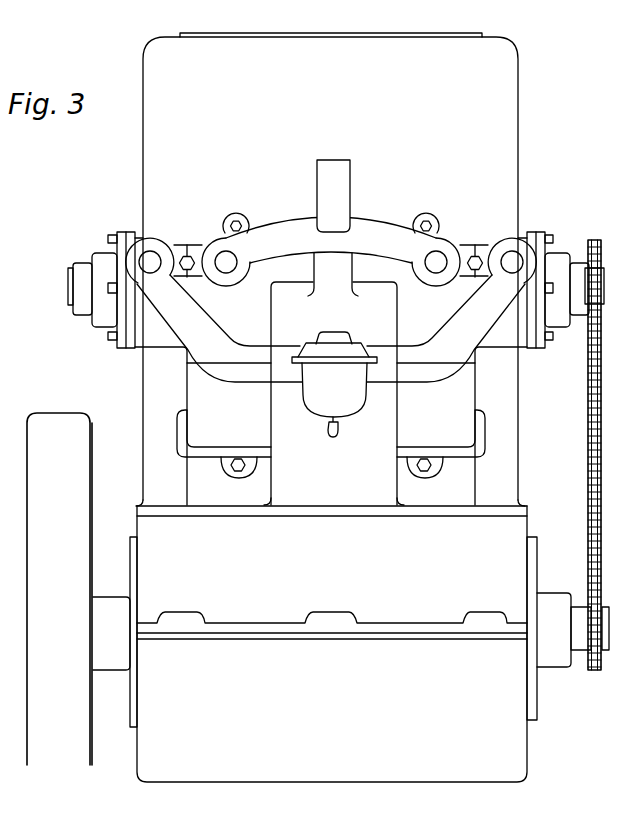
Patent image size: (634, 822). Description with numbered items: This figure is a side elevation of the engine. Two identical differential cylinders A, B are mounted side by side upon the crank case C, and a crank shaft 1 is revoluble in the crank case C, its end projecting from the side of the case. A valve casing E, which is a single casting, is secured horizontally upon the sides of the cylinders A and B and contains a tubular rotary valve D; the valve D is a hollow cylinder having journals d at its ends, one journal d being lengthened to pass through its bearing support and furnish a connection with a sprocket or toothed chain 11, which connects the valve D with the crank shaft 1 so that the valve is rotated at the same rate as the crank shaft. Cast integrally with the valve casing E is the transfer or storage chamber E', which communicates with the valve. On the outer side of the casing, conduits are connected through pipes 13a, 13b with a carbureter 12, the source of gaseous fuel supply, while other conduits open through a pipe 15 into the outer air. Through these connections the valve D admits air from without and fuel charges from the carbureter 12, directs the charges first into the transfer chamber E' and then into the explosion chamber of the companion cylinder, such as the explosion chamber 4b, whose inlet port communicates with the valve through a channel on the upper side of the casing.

The differential cylinder A is at (484, 74).
The differential cylinder B is at (152, 60).
The crank case C is at (502, 748).
The rotary valve D is at (65, 266).
The journal d is at (68, 288).
The valve casing E is at (287, 297).
The transfer chamber E' is at (331, 420).
The crank shaft 1 is at (584, 636).
The explosion chamber 4b is at (633, 188).
The sprocket or toothed chain 11 is at (590, 430).
The carbureter 12 is at (347, 400).
The pipe 13a is at (434, 316).
The pipe 13b is at (195, 334).
The pipe 15 is at (364, 234).